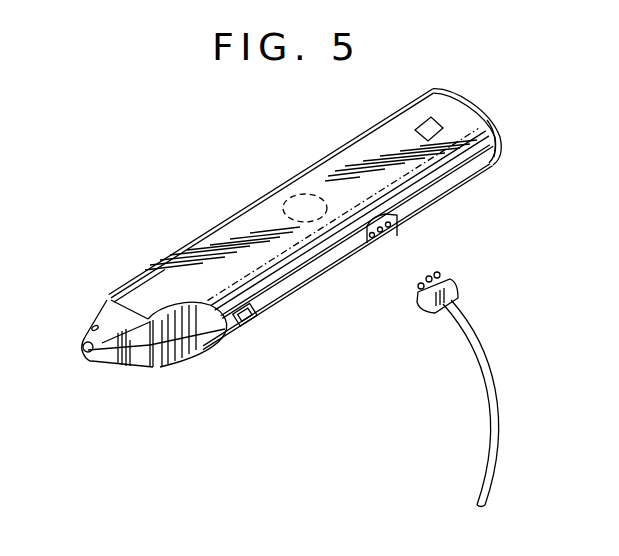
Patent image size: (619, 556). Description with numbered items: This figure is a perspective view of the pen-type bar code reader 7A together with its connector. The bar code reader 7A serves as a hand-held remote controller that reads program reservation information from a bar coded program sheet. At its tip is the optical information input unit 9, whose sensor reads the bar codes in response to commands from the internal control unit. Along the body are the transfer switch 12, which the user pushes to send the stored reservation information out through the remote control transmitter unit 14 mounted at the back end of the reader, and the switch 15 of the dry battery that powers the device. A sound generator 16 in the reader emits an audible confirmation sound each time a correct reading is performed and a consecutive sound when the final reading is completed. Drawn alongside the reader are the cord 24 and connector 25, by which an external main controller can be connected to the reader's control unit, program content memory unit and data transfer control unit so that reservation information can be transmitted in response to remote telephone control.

The bar code reader 7A is at (203, 238).
The optical information input unit 9 is at (90, 362).
The transfer switch 12 is at (415, 127).
The remote control transmitter unit 14 is at (487, 114).
The switch of the dry battery 15 is at (245, 322).
The sound generator 16 is at (307, 195).
The cord 24 is at (490, 417).
The connector 25 is at (455, 288).